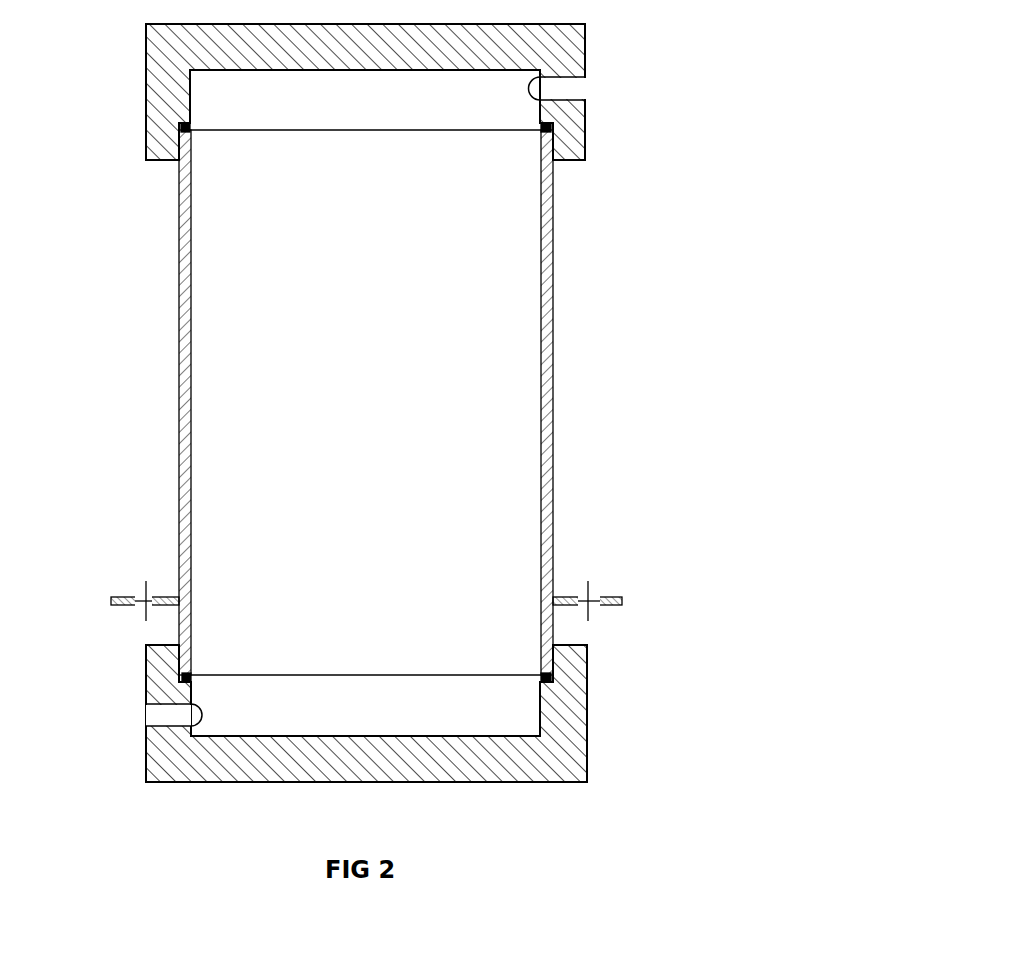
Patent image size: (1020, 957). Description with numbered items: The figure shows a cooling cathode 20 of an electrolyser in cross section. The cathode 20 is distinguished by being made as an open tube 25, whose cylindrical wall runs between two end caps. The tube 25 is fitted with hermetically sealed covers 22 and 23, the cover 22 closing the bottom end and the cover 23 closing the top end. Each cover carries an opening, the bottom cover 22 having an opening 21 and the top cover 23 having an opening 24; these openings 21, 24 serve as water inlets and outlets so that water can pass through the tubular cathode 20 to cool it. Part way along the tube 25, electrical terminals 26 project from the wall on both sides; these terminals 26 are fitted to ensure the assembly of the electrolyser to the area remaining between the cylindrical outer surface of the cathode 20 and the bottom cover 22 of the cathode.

The cathode 20 is at (553, 345).
The opening 21 is at (202, 715).
The cover 22 is at (573, 758).
The cover 23 is at (573, 44).
The opening 24 is at (528, 88).
The open tube 25 is at (546, 419).
The electrical terminals 26 is at (108, 601).